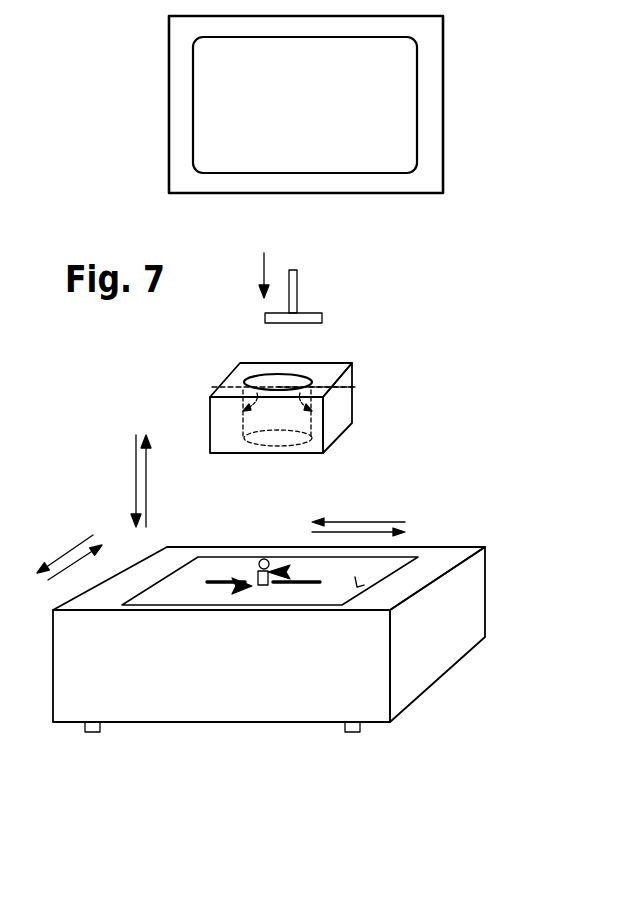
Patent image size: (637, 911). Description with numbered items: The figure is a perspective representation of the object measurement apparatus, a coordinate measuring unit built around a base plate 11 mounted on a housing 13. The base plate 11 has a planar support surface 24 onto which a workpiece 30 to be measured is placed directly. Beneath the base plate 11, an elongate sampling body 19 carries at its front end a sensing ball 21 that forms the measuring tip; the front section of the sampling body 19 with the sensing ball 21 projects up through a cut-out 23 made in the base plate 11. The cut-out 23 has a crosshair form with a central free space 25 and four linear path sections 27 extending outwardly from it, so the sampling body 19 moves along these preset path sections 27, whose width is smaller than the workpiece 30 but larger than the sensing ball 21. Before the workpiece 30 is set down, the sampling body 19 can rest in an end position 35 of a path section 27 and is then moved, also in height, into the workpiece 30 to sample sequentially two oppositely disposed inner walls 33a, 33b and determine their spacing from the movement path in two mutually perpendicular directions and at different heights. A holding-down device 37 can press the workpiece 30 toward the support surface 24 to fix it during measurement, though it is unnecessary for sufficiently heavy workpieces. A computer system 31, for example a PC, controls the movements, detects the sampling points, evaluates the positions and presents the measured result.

The base plate 11 is at (440, 558).
The housing 13 is at (308, 710).
The sampling body 19 is at (270, 587).
The sensing ball 21 is at (262, 558).
The cut-out 23 is at (222, 590).
The support surface 24 is at (377, 578).
The central free space 25 is at (258, 587).
The path sections 27 is at (297, 580).
The workpiece 30 is at (340, 415).
The computer system 31 is at (430, 97).
The inner wall 33a is at (212, 387).
The inner wall 33b is at (362, 383).
The end position 35 is at (214, 570).
The holding-down device 37 is at (297, 287).